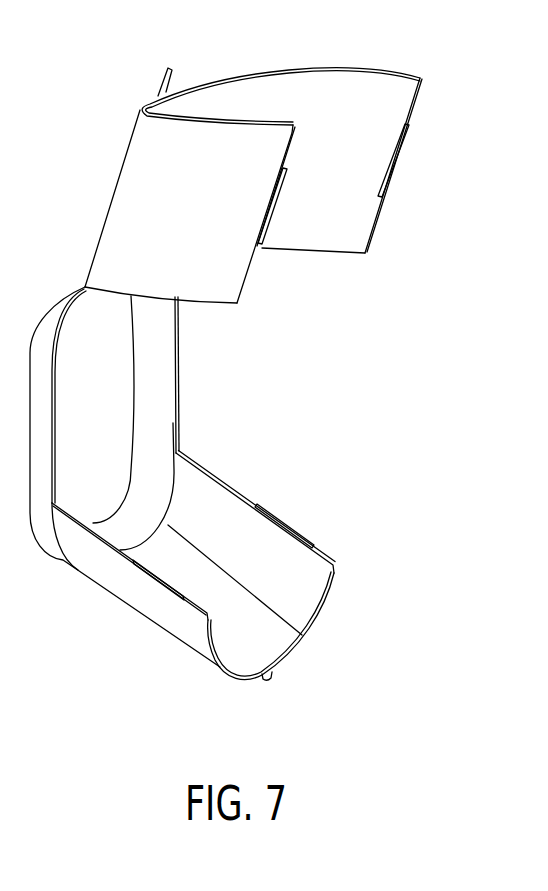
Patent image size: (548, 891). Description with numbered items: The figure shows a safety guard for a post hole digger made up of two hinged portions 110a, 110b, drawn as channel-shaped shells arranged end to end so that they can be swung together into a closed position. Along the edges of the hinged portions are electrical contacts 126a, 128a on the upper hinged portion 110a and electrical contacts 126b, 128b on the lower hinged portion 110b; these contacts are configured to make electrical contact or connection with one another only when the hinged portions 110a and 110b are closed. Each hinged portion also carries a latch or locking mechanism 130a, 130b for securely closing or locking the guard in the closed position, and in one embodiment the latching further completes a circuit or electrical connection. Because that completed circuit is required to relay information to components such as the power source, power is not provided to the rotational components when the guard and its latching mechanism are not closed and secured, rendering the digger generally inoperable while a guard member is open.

The hinged portion 110a is at (358, 210).
The electrical contact 126a is at (393, 160).
The electrical contact 128a is at (268, 207).
The latch or locking mechanism 130a is at (168, 70).
The hinged portion 110b is at (303, 568).
The electrical contact 126b is at (273, 520).
The electrical contact 128b is at (163, 580).
The latch or locking mechanism 130b is at (268, 682).